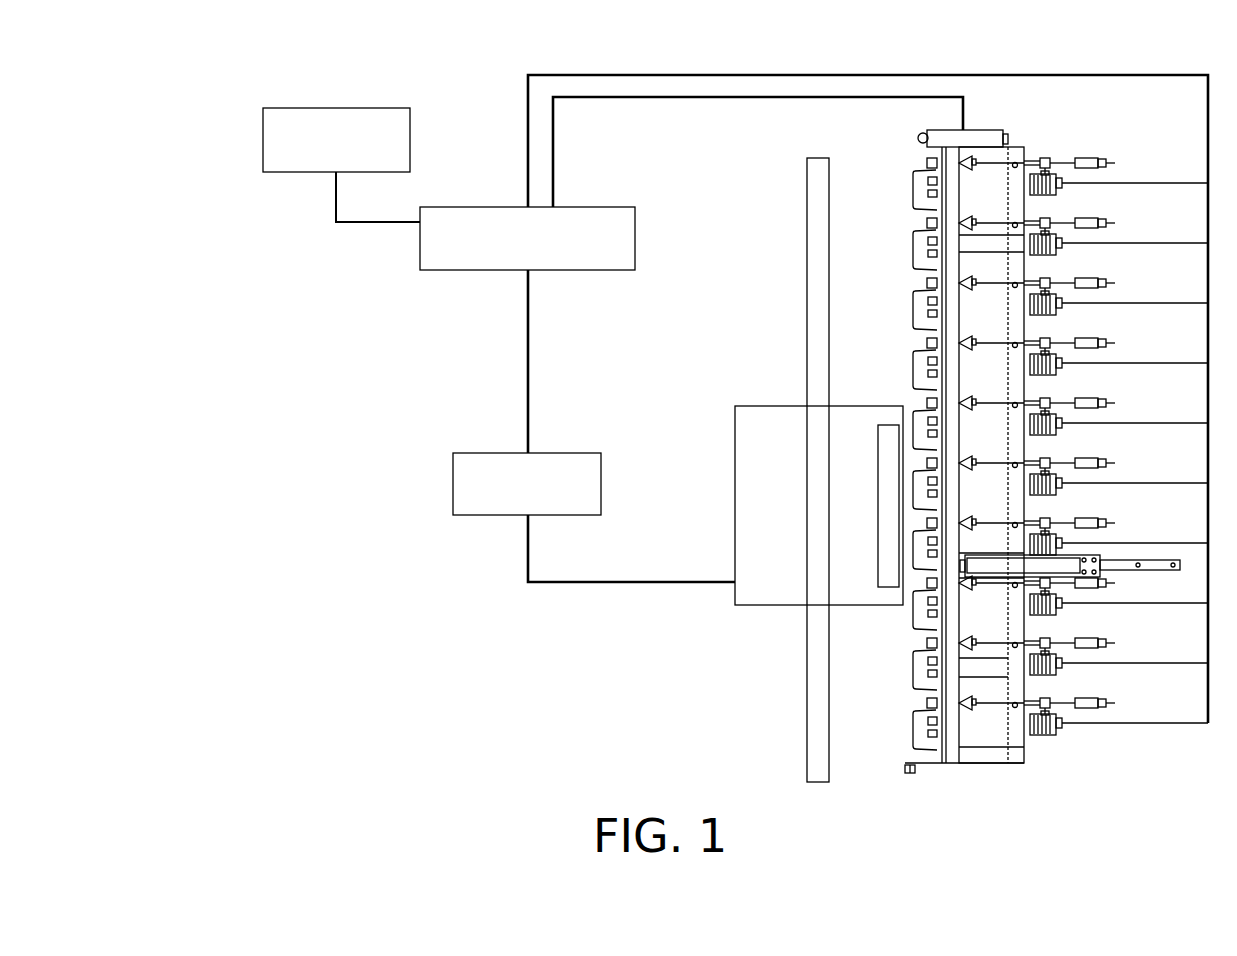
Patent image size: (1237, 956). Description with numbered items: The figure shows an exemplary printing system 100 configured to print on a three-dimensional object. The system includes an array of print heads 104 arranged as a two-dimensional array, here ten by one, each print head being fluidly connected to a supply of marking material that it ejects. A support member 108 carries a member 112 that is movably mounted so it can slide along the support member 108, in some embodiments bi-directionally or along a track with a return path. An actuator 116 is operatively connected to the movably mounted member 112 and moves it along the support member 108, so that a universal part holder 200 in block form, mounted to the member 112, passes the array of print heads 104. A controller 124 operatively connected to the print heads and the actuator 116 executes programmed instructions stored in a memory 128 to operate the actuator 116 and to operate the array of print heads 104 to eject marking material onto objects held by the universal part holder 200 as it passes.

The printing system 100 is at (456, 57).
The array of print heads 104 is at (895, 271).
The support member 108 is at (807, 672).
The movably mounted member 112 is at (735, 551).
The actuator 116 is at (495, 517).
The controller 124 is at (578, 272).
The memory 128 is at (263, 137).
The universal part holder 200 is at (878, 505).